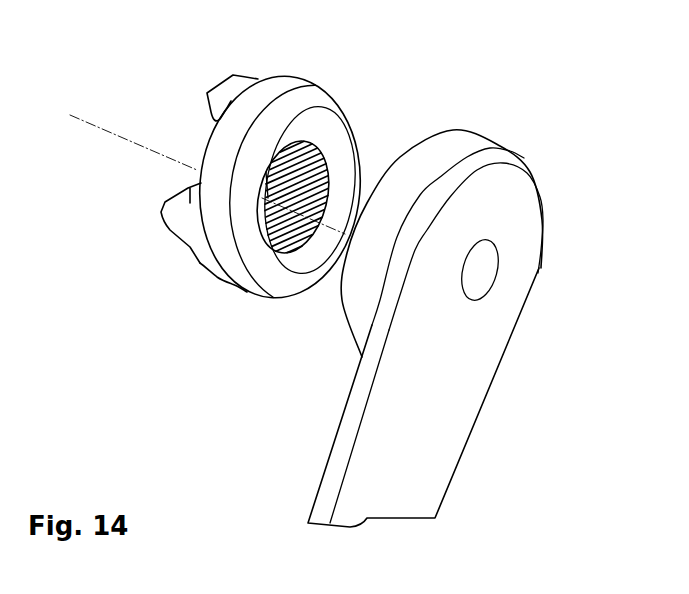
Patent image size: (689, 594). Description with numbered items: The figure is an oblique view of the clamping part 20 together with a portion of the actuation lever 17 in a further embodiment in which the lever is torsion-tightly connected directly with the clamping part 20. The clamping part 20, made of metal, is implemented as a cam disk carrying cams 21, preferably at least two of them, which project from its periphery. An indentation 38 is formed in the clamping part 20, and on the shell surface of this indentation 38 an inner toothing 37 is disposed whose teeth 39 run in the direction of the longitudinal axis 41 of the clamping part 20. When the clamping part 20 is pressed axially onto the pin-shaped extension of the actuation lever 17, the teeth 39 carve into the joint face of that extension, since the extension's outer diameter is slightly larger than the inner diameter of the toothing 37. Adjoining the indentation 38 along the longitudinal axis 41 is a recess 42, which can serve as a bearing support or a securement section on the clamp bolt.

The actuation lever 17 is at (480, 455).
The clamping part 20 is at (222, 292).
The cam 21 is at (223, 92).
The toothing 37 is at (263, 216).
The indentation 38 is at (303, 183).
The teeth 39 is at (293, 262).
The longitudinal axis 41 is at (116, 113).
The recess 42 is at (267, 176).